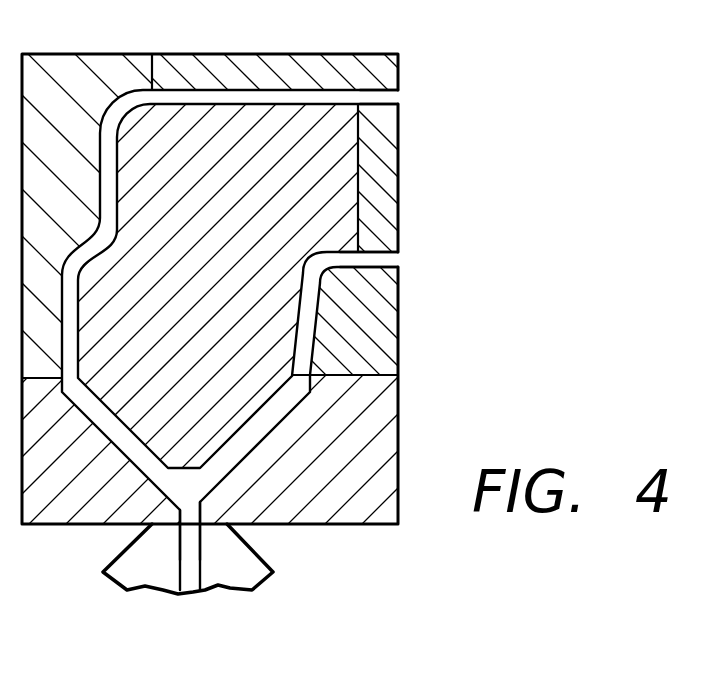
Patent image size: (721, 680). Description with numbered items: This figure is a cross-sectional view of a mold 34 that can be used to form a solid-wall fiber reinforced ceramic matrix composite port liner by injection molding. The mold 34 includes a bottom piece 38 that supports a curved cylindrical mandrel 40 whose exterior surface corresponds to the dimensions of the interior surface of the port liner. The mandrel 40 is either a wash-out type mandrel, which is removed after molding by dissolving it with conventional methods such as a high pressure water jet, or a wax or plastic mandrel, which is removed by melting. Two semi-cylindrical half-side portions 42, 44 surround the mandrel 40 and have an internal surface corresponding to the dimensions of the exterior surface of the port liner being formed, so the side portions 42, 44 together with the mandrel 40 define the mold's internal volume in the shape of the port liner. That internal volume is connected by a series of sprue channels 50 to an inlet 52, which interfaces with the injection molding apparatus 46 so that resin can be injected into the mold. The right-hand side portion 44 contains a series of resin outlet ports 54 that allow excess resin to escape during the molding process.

The mold 34 is at (497, 149).
The bottom piece 38 is at (353, 508).
The curved cylindrical mandrel 40 is at (172, 115).
The semi-cylindrical half-side portion 42 is at (63, 68).
The right-hand side portion 44 is at (392, 335).
The injection molding apparatus 46 is at (228, 568).
The sprue channels 50 is at (100, 409).
The inlet 52 is at (171, 504).
The resin outlet ports 54 is at (422, 85).